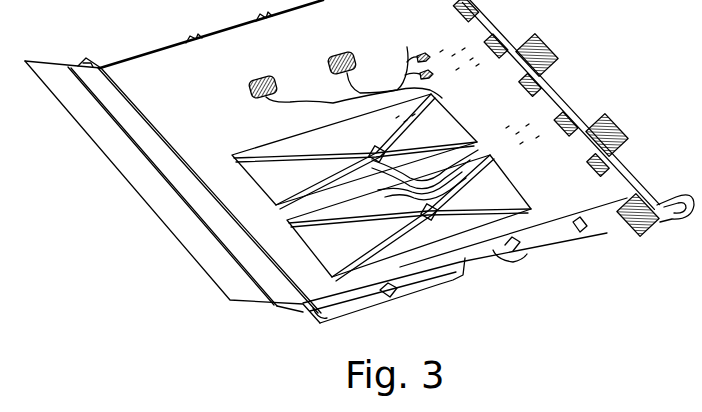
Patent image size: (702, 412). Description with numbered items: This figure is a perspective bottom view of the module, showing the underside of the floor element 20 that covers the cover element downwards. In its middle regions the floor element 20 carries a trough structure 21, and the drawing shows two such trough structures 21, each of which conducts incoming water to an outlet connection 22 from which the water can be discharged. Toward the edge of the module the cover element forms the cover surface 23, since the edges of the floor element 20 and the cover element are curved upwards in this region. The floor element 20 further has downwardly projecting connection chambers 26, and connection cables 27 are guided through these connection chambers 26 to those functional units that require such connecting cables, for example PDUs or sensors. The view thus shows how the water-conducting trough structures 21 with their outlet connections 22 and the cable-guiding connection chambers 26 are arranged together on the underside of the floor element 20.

The floor element 20 is at (163, 52).
The trough structure 21 is at (438, 127).
The outlet connection 22 is at (360, 162).
The cover surface 23 is at (170, 230).
The connection chambers 26 is at (250, 92).
The connection cables 27 is at (406, 54).